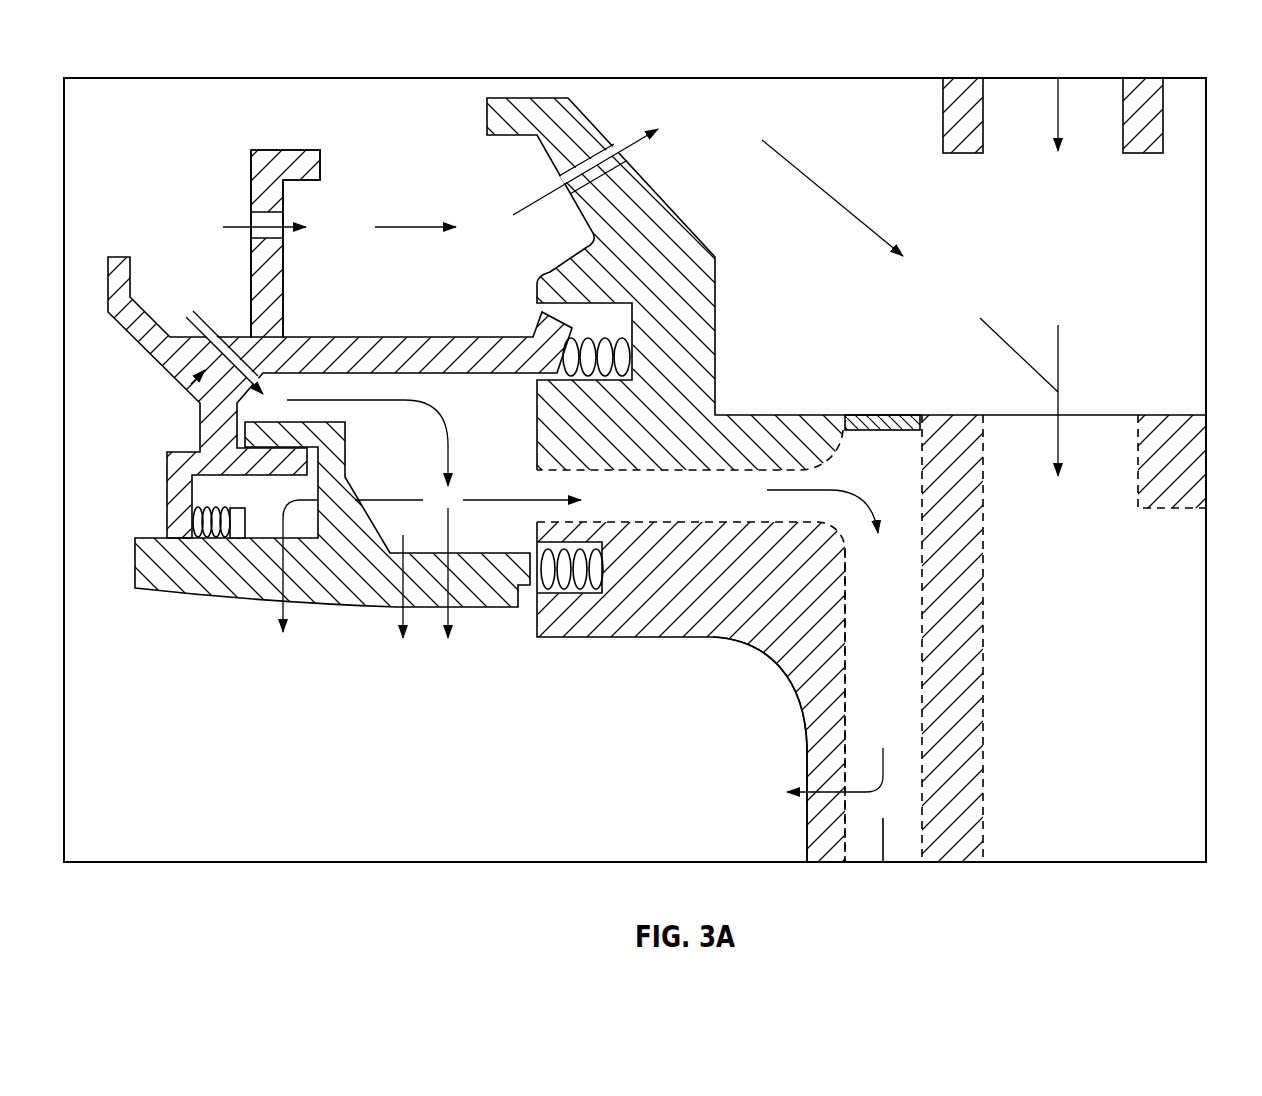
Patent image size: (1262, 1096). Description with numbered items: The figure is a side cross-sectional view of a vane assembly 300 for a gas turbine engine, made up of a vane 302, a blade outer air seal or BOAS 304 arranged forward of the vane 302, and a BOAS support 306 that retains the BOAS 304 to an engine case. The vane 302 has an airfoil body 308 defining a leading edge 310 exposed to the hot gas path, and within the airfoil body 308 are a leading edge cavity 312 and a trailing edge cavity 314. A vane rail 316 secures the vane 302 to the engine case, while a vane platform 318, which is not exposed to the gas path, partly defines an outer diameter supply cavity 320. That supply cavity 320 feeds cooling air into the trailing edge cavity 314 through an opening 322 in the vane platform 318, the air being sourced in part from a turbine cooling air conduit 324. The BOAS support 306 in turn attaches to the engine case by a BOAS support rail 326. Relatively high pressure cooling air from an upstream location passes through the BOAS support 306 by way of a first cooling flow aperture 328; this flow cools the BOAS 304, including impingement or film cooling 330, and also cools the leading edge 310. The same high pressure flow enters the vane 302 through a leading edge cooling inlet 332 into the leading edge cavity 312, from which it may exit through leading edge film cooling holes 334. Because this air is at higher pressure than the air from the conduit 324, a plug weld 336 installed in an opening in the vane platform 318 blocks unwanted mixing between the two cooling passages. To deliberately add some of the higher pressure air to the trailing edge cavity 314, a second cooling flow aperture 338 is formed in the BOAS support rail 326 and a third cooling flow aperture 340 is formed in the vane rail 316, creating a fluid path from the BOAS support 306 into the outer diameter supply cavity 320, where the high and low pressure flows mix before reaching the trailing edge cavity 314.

The vane assembly 300 is at (503, 740).
The vane 302 is at (647, 624).
The blade outer air seal (BOAS) 304 is at (210, 578).
The BOAS support 306 is at (428, 348).
The airfoil body 308 is at (960, 850).
The leading edge 310 is at (807, 844).
The leading edge cavity 312 is at (910, 593).
The trailing edge cavity 314 is at (1085, 539).
The vane rail 316 is at (524, 110).
The vane platform 318 is at (945, 413).
The outer diameter supply cavity 320 is at (1055, 279).
The opening 322 is at (1080, 400).
The turbine cooling air (TCA) conduit 324 is at (950, 110).
The BOAS support rail 326 is at (271, 165).
The first cooling flow aperture 328 is at (193, 387).
The impingement or film cooling 330 is at (403, 652).
The leading edge cooling inlet 332 is at (549, 450).
The leading edge film cooling holes 334 is at (801, 754).
The plug weld 336 is at (870, 413).
The second cooling flow aperture 338 is at (299, 211).
The third cooling flow aperture 340 is at (644, 121).